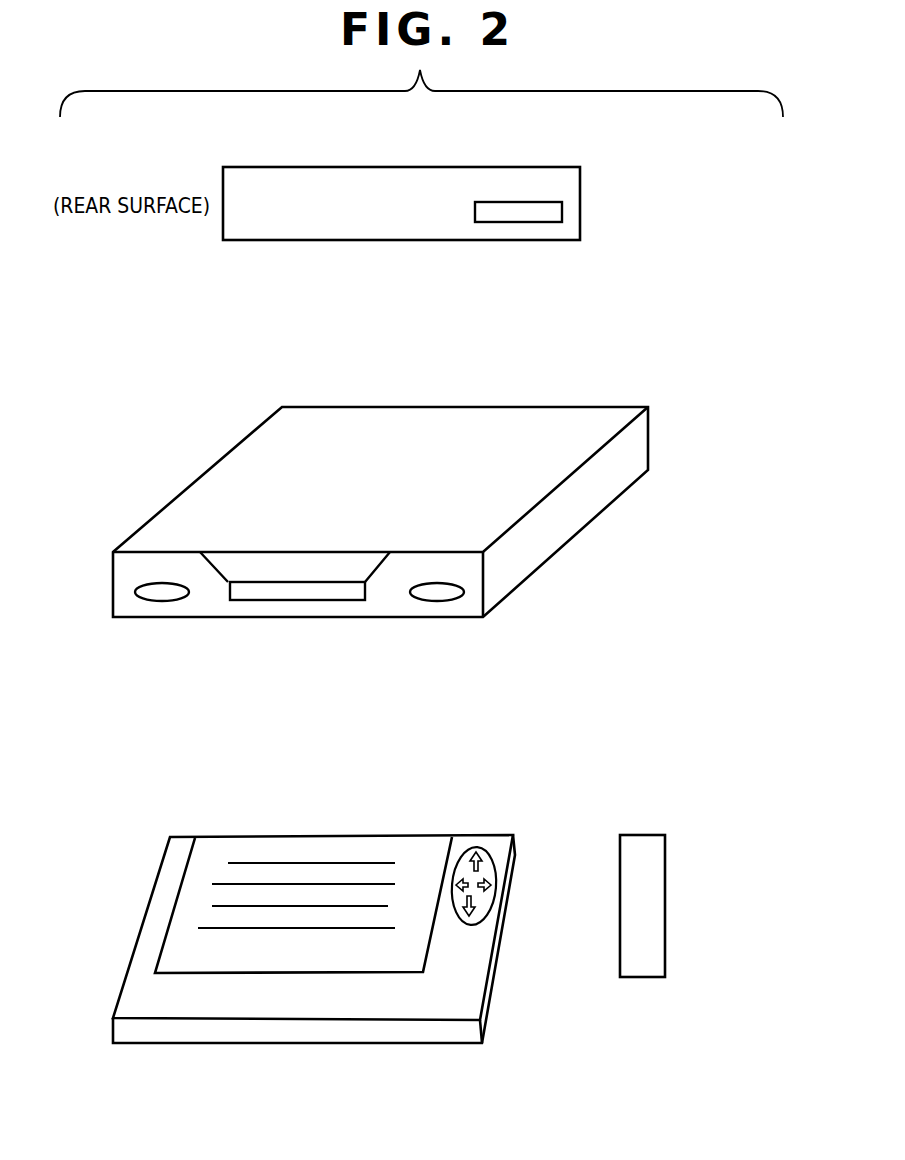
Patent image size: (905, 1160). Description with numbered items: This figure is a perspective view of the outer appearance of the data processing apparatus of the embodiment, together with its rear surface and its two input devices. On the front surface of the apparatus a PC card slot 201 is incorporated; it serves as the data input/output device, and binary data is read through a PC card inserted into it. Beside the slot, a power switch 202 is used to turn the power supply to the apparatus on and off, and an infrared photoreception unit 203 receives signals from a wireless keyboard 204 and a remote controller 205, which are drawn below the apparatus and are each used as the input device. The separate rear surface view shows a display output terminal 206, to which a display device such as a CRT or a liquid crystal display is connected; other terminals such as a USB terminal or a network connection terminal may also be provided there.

The PC card slot 201 is at (323, 600).
The power switch 202 is at (163, 601).
The infrared photoreception unit 203 is at (442, 601).
The wireless keyboard 204 is at (245, 1043).
The remote controller 205 is at (642, 977).
The display output terminal 206 is at (520, 222).